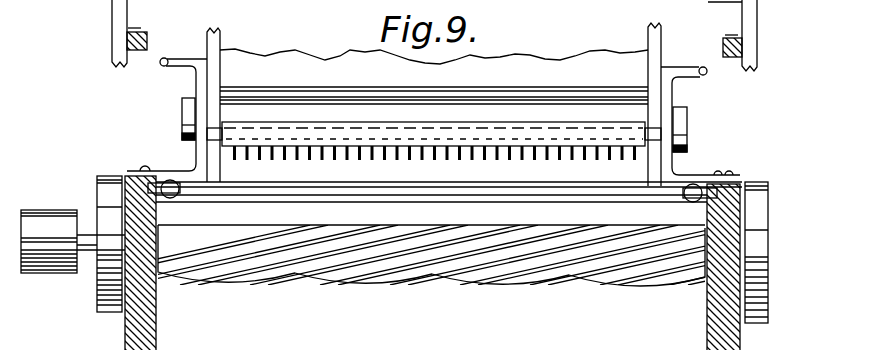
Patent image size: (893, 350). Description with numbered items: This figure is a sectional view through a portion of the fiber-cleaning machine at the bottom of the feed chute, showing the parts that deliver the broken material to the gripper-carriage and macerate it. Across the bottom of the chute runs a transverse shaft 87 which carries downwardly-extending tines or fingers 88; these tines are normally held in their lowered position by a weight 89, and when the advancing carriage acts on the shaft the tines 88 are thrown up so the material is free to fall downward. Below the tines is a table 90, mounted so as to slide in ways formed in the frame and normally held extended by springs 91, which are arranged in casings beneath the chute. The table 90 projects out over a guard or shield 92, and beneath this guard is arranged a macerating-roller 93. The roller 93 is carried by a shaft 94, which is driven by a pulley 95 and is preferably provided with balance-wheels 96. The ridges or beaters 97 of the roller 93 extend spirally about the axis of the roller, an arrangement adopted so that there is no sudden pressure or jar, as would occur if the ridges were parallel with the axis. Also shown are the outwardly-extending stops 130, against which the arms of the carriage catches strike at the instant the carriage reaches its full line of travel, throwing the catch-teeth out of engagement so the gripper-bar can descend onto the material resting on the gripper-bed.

The transverse shaft 87 is at (226, 134).
The tines 88 is at (439, 166).
The weight 89 is at (698, 121).
The table 90 is at (449, 193).
The springs 91 is at (168, 180).
The guard 92 is at (431, 214).
The macerating-roller 93 is at (466, 269).
The shaft 94 is at (86, 255).
The pulley 95 is at (49, 231).
The balance-wheels 96 is at (103, 194).
The ridges 97 is at (238, 269).
The stops 130 is at (433, 108).